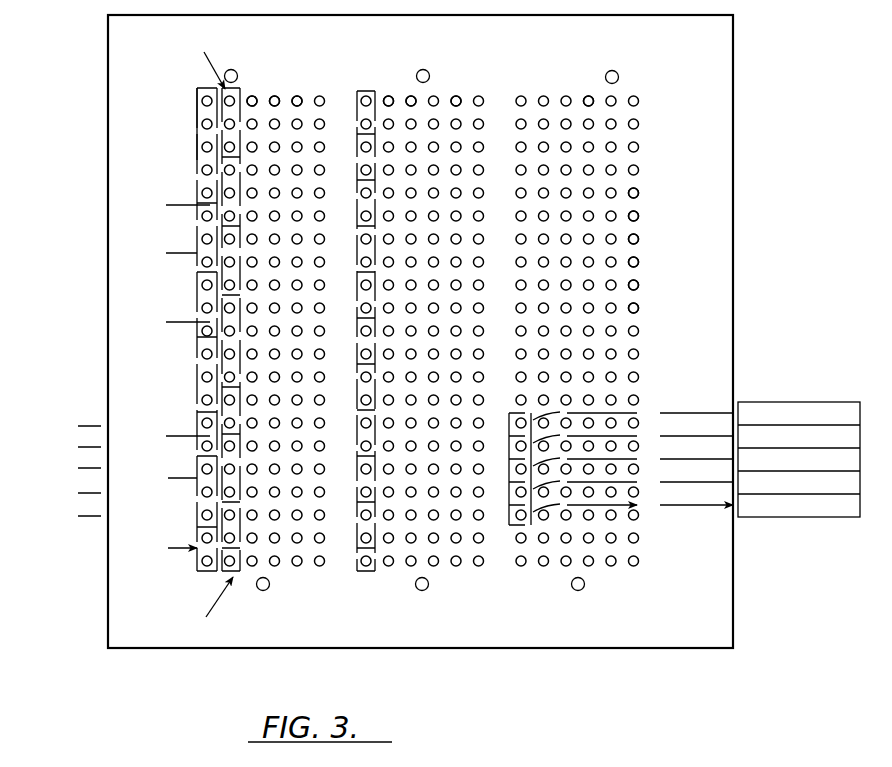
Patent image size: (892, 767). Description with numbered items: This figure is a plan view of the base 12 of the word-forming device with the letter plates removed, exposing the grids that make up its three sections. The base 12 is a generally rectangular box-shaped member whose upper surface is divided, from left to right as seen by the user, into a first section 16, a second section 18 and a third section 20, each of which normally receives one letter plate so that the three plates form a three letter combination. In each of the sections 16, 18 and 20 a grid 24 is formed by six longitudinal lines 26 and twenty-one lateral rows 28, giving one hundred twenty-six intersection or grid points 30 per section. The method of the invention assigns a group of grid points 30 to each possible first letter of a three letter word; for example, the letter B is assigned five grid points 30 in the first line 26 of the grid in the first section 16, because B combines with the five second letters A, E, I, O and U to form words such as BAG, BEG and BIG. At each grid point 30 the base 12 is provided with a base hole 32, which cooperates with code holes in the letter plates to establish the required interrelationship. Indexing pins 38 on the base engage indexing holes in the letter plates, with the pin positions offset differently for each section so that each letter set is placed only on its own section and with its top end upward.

The base 12 is at (736, 142).
The first section 16 is at (306, 578).
The second section 18 is at (483, 569).
The third section 20 is at (641, 571).
The grid 24 is at (297, 92).
The longitudinal lines 26 is at (275, 93).
The lateral rows 28 is at (197, 146).
The grid points 30 is at (411, 93).
The base holes 32 is at (641, 238).
The indexing pins 38 is at (229, 70).